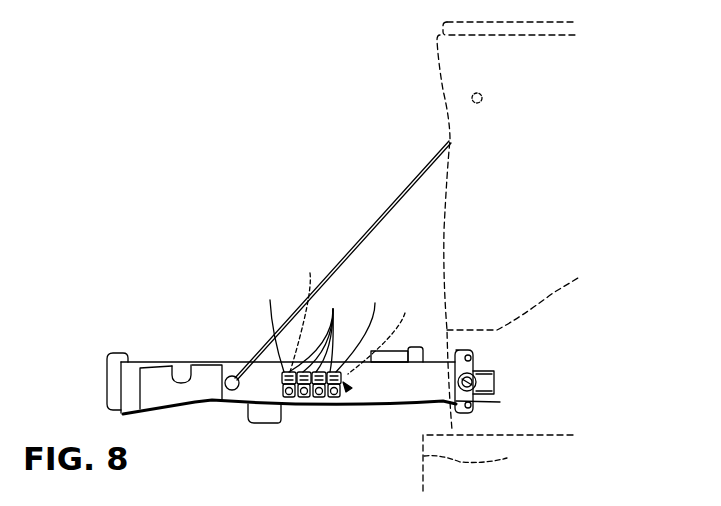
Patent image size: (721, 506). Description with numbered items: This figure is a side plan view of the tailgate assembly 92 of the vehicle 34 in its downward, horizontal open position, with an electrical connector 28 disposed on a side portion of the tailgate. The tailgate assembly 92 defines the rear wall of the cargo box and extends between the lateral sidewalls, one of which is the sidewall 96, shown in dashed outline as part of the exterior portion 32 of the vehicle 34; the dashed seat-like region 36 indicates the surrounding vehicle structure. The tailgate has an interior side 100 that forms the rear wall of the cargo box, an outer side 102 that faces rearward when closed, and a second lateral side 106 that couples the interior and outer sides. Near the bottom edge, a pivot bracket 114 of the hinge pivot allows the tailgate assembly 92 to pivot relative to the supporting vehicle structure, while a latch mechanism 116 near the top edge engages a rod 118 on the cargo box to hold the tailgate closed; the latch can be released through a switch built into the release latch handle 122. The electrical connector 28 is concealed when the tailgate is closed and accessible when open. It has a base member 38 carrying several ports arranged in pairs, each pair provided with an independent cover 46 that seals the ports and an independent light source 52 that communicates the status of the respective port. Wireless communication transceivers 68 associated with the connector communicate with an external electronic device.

The electrical connector 28 is at (361, 372).
The exterior portion 32 is at (515, 369).
The vehicle 34 is at (494, 380).
The seat structure 36 is at (445, 98).
The base member 38 is at (320, 331).
The cover 46 is at (332, 397).
The light source 52 is at (326, 327).
The wireless communication transceiver 68 is at (355, 314).
The tailgate assembly 92 is at (200, 406).
The lateral sidewall 96 is at (541, 77).
The interior side 100 is at (147, 362).
The outer side 102 is at (167, 407).
The second lateral side 106 is at (383, 388).
The pivot bracket 114 is at (448, 408).
The latch mechanism 116 is at (180, 372).
The rod 118 is at (483, 98).
The tailgate assembly release latch handle 122 is at (252, 420).